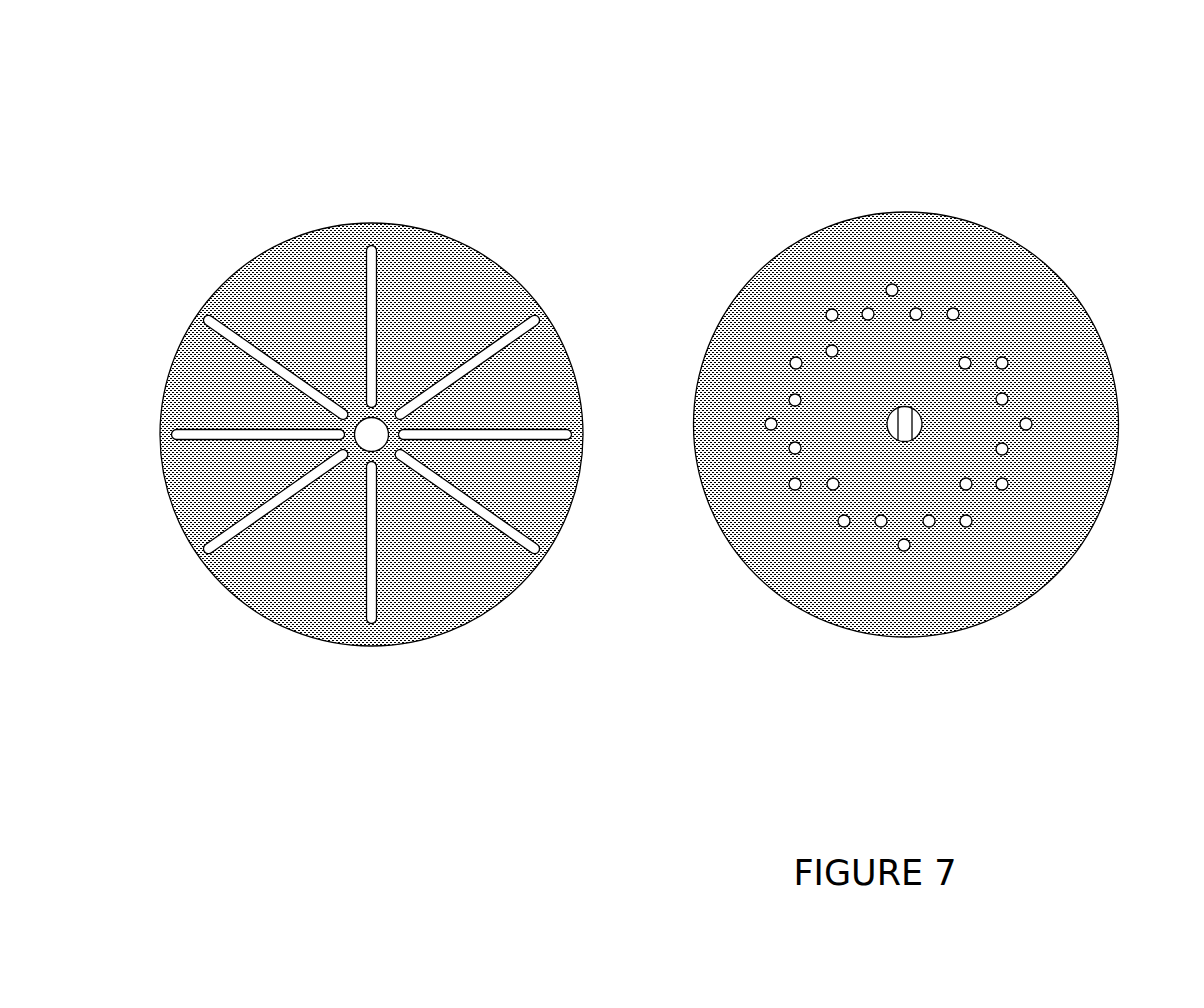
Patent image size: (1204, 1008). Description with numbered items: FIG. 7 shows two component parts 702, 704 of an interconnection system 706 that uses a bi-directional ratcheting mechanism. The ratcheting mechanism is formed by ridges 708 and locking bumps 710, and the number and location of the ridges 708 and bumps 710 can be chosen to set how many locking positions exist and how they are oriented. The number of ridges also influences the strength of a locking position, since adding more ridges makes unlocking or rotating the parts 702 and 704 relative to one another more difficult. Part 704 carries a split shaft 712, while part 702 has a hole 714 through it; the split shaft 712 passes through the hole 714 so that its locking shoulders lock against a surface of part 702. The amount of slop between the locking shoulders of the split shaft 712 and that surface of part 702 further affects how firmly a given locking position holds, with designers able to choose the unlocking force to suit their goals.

The component part 702 is at (409, 467).
The component part 704 is at (938, 443).
The interconnection system 706 is at (670, 383).
The ridges 708 is at (537, 428).
The locking bumps 710 is at (1033, 402).
The split shaft 712 is at (923, 390).
The hole 714 is at (392, 392).